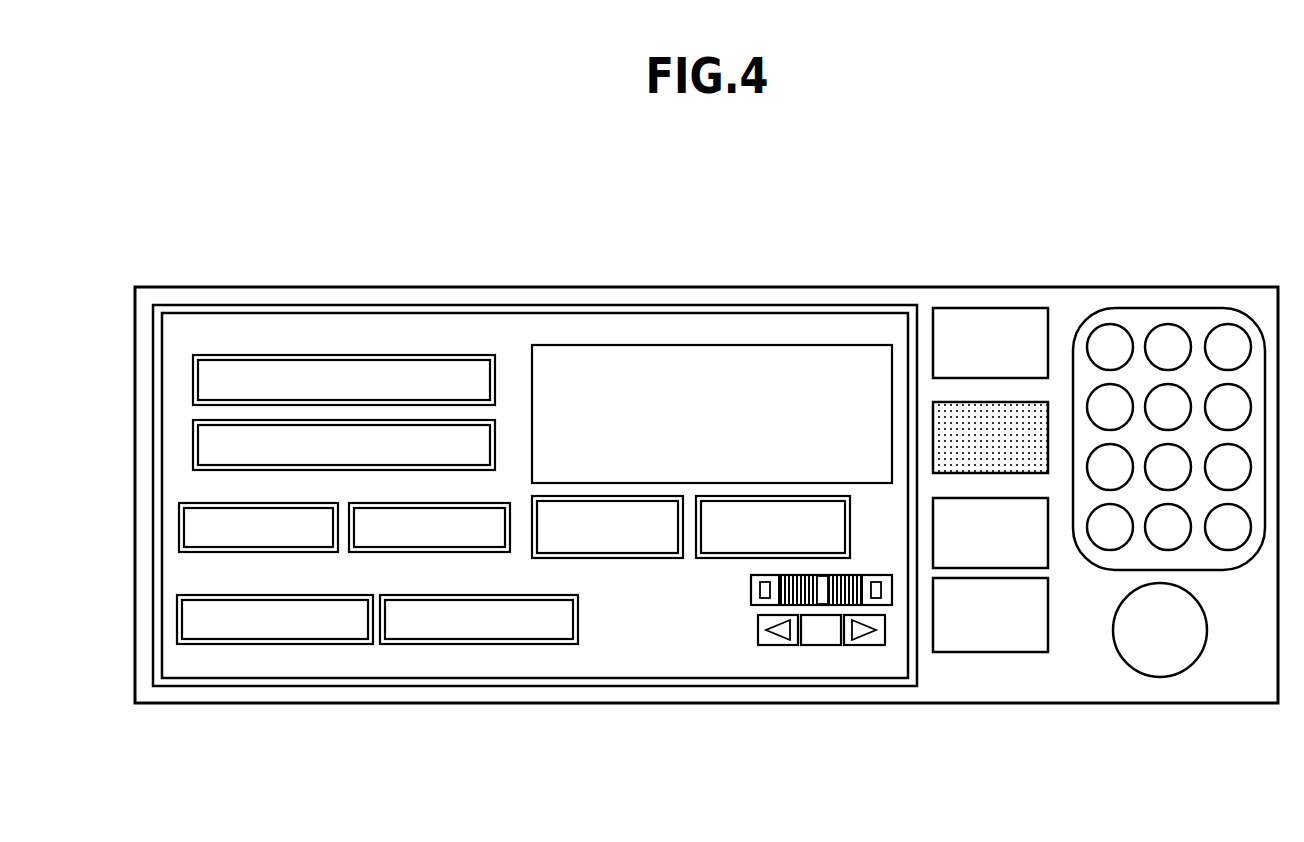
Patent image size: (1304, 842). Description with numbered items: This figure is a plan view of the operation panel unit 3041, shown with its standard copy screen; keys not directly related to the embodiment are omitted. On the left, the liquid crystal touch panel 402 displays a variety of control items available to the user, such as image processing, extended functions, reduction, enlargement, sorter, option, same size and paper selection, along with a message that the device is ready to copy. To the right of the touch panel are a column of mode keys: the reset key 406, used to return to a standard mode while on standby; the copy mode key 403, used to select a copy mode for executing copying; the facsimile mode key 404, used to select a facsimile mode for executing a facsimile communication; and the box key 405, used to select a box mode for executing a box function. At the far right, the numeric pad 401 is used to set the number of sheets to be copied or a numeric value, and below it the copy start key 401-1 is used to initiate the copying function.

The operation panel unit 3041 is at (661, 287).
The liquid crystal touch panel 402 is at (155, 718).
The reset key 406 is at (987, 308).
The copy mode key 403 is at (1048, 453).
The facsimile mode key 404 is at (1048, 550).
The box key 405 is at (985, 652).
The numeric pad 401 is at (1168, 308).
The copy start key 401-1 is at (1186, 670).